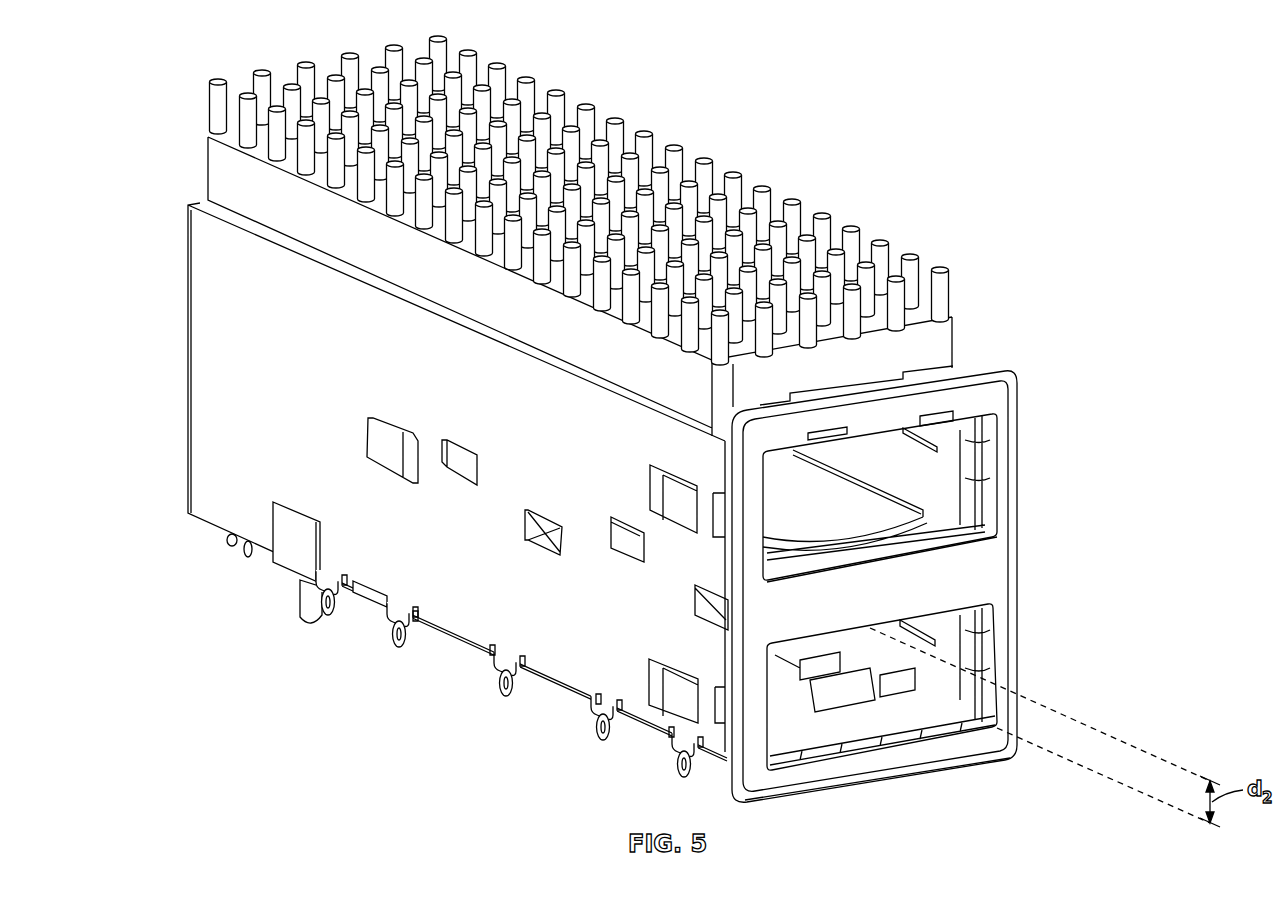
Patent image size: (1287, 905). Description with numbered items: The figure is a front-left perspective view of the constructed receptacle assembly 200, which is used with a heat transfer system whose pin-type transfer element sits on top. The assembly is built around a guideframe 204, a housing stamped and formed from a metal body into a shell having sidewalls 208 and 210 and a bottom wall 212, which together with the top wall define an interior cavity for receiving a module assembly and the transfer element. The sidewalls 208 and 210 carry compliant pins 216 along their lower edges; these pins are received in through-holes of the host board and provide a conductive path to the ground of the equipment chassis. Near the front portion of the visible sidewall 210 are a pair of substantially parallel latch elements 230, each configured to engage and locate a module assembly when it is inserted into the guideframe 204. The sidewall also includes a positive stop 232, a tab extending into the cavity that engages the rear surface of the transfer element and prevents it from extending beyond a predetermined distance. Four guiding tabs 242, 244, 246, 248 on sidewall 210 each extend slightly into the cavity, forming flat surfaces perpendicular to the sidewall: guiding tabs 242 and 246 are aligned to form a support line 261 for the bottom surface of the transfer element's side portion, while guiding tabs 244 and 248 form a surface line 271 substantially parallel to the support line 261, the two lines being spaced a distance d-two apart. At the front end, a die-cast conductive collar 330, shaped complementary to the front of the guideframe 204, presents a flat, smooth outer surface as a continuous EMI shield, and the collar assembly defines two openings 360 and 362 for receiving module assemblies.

The receptacle assembly 200 is at (615, 434).
The guideframe 204 is at (176, 426).
The sidewall 208 is at (931, 592).
The sidewall 210 is at (570, 490).
The bottom wall 212 is at (892, 806).
The compliant pins 216 is at (405, 647).
The latch elements 230 is at (660, 470).
The positive stop 232 is at (413, 441).
The guiding tab 242 is at (705, 607).
The guiding tab 244 is at (630, 553).
The guiding tab 246 is at (548, 522).
The guiding tab 248 is at (458, 480).
The support line 261 is at (1120, 784).
The surface line 271 is at (1120, 742).
The collar 330 is at (990, 395).
The opening 360 is at (935, 483).
The opening 362 is at (960, 652).